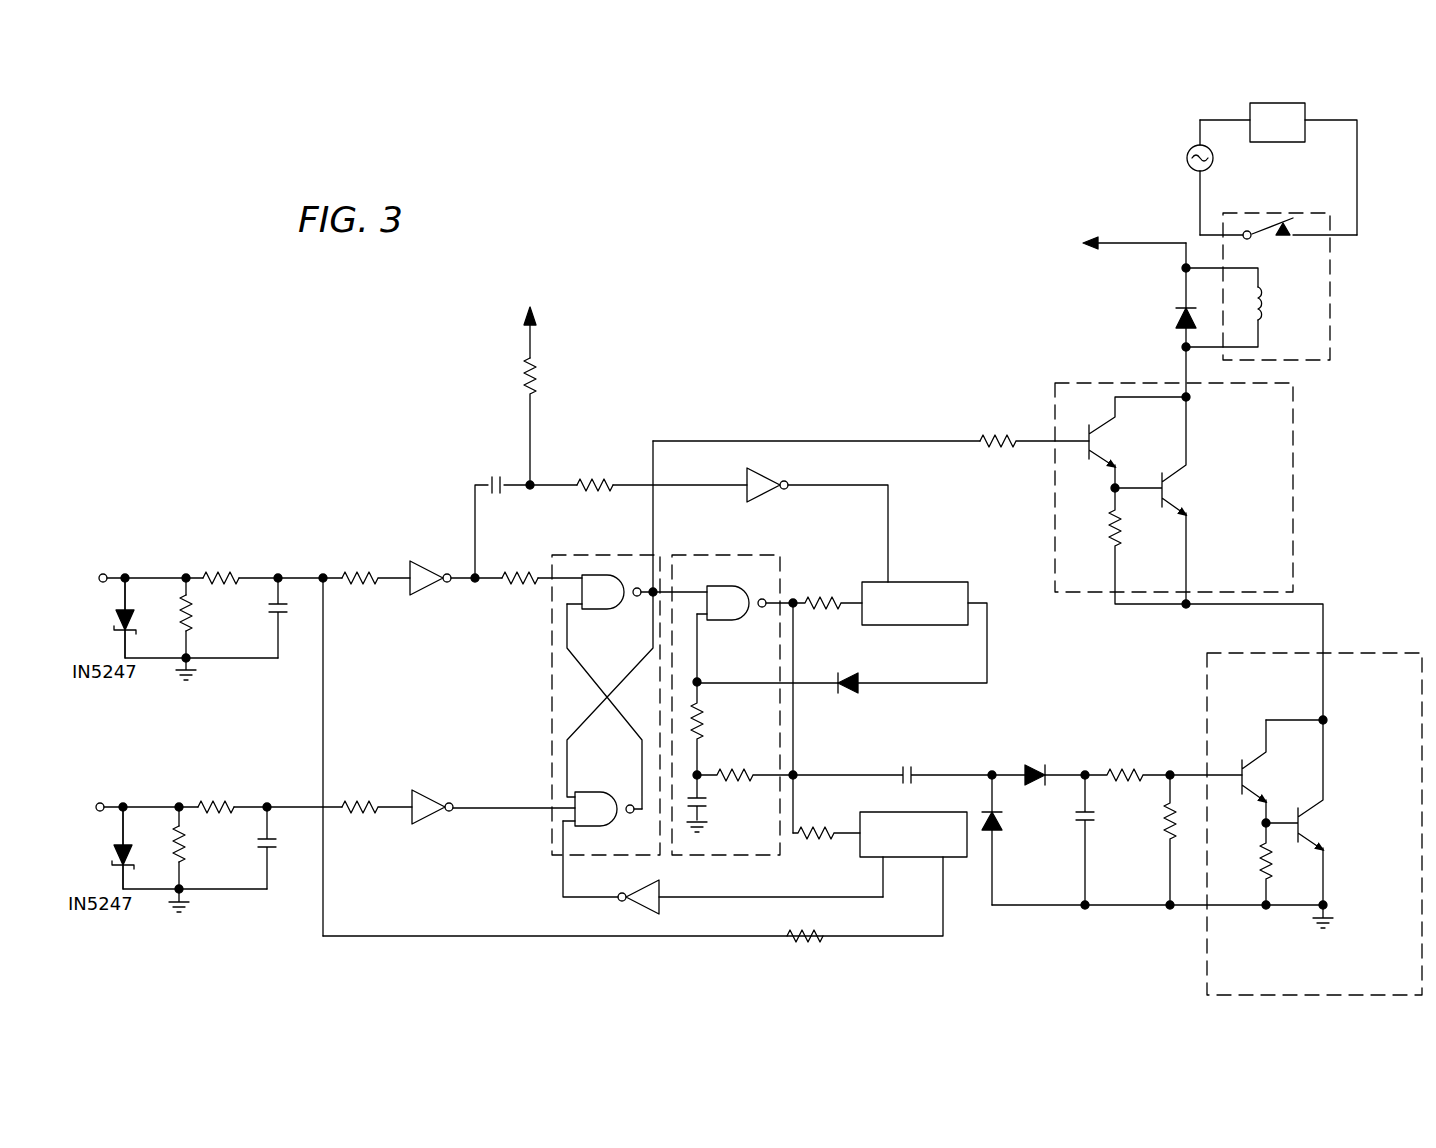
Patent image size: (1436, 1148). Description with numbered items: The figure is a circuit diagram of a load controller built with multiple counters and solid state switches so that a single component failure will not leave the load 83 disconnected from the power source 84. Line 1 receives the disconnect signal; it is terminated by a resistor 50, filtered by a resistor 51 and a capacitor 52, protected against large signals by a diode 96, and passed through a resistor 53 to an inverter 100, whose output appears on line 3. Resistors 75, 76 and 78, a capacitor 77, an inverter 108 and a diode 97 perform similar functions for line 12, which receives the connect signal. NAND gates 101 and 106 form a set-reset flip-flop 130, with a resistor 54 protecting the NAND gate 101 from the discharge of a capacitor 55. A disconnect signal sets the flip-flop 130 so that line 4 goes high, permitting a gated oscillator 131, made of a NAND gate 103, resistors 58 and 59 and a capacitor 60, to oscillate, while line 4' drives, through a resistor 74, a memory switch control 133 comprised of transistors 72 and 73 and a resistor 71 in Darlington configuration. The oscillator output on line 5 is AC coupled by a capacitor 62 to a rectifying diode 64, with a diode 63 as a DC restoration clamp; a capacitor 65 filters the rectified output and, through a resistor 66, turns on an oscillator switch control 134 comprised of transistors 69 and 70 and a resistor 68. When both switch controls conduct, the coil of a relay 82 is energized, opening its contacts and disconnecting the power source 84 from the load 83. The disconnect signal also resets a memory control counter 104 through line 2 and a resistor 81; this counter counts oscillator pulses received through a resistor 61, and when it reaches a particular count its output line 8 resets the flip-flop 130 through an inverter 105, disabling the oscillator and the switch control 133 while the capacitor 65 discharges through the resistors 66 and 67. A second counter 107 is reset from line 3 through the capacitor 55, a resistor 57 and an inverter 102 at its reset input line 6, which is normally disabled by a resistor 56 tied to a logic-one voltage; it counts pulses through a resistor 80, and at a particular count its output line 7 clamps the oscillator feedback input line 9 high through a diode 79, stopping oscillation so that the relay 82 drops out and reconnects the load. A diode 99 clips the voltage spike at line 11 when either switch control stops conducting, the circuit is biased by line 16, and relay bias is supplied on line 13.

The line 1 is at (100, 574).
The line 12 is at (104, 805).
The diode 96 is at (114, 618).
The diode 97 is at (112, 850).
The resistor 50 is at (182, 621).
The resistor 51 is at (208, 572).
The capacitor 52 is at (279, 604).
The resistor 53 is at (360, 572).
The resistor 54 is at (496, 571).
The inverter 100 is at (424, 588).
The line 3 is at (486, 584).
The resistor 75 is at (175, 850).
The resistor 76 is at (218, 800).
The capacitor 77 is at (268, 837).
The resistor 78 is at (366, 799).
The inverter 108 is at (438, 814).
The line 16 is at (528, 342).
The resistor 56 is at (526, 379).
The capacitor 55 is at (504, 480).
The resistor 57 is at (592, 480).
The inverter 102 is at (764, 496).
The line 6 is at (837, 484).
The line 4 is at (671, 516).
The line 4' is at (816, 425).
The resistor 74 is at (995, 437).
The set-reset flip-flop 130 is at (546, 678).
The NAND gate 101 is at (596, 610).
The NAND gate 106 is at (585, 791).
The inverter 105 is at (638, 885).
The line 8 is at (786, 894).
The gated oscillator 131 is at (678, 856).
The NAND gate 103 is at (720, 622).
The line 9 is at (698, 668).
The resistor 58 is at (704, 728).
The resistor 59 is at (740, 770).
The capacitor 60 is at (704, 824).
The line 5 is at (794, 712).
The resistor 80 is at (814, 598).
The counter 107 is at (928, 582).
The line 7 is at (988, 665).
The diode 79 is at (852, 690).
The resistor 61 is at (840, 804).
The memory control counter 104 is at (930, 812).
The line 2 is at (515, 935).
The resistor 81 is at (822, 936).
The capacitor 62 is at (905, 770).
The diode 63 is at (986, 836).
The rectifying diode 64 is at (1054, 768).
The capacitor 65 is at (1086, 816).
The resistor 66 is at (1132, 775).
The resistor 67 is at (1174, 832).
The oscillator switch control 134 is at (1330, 653).
The transistor 69 is at (1240, 765).
The transistor 70 is at (1296, 818).
The resistor 68 is at (1268, 868).
The memory switch control 133 is at (1295, 545).
The transistor 72 is at (1086, 428).
The transistor 73 is at (1160, 478).
The resistor 71 is at (1122, 525).
The line 11 is at (1183, 369).
The line 13 is at (1125, 243).
The diode 99 is at (1176, 306).
The relay 82 is at (1332, 318).
The load 83 is at (1280, 103).
The power source 84 is at (1214, 158).